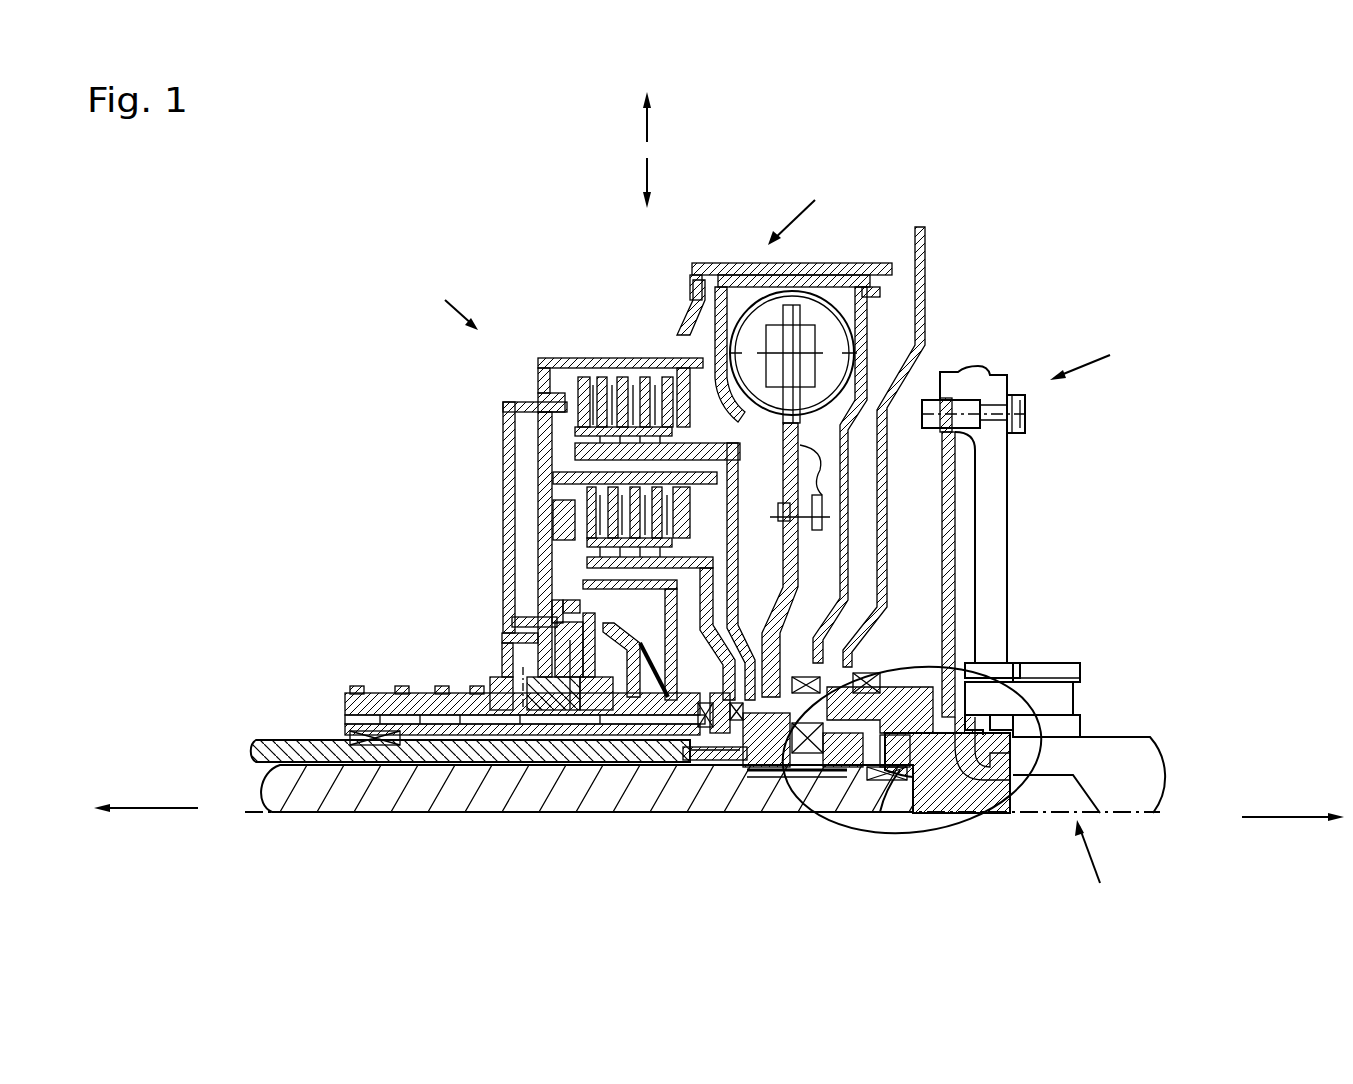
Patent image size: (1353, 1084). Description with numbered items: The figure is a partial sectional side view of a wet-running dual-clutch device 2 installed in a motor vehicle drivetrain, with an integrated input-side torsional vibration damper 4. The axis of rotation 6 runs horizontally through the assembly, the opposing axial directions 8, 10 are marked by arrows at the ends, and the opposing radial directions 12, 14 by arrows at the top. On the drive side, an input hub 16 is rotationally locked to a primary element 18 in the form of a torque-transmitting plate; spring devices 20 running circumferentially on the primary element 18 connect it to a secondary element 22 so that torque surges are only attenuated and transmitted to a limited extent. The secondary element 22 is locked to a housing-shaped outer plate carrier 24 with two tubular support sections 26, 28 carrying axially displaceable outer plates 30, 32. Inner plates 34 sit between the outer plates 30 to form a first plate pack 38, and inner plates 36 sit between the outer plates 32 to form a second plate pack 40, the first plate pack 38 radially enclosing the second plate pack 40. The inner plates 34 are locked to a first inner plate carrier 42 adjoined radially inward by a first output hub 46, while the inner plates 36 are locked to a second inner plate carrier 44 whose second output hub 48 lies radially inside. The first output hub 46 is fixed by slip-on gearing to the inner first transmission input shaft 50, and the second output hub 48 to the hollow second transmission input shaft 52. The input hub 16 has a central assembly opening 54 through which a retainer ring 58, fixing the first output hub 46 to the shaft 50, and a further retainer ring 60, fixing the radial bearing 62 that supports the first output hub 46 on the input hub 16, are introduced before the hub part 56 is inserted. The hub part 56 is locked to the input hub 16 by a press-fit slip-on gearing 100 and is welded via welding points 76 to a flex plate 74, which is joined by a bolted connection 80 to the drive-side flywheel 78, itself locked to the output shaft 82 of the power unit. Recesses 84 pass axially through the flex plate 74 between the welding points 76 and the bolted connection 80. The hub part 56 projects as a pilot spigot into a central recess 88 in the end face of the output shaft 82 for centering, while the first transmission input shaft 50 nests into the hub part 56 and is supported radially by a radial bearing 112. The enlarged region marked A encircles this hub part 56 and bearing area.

The clutch device 2 is at (446, 297).
The torsional vibration damper 4 is at (803, 208).
The axis of rotation 6 is at (1094, 869).
The axial direction 8 is at (1295, 817).
The axial direction 10 is at (152, 808).
The radial direction 12 is at (647, 128).
The radial direction 14 is at (647, 178).
The input hub 16 is at (770, 720).
The primary element 18 is at (855, 415).
The spring devices 20 is at (838, 325).
The secondary element 22 is at (823, 282).
The outer plate carrier 24 is at (547, 440).
The support section 26 is at (605, 363).
The support section 28 is at (597, 478).
The outer plates 30 is at (595, 398).
The outer plates 32 is at (635, 510).
The inner plates 34 is at (593, 393).
The inner plates 36 is at (595, 578).
The first plate pack 38 is at (565, 405).
The second plate pack 40 is at (578, 505).
The first inner plate carrier 42 is at (733, 493).
The second inner plate carrier 44 is at (707, 595).
The first output hub 46 is at (735, 745).
The second output hub 48 is at (718, 720).
The first transmission input shaft 50 is at (467, 788).
The second transmission input shaft 52 is at (407, 752).
The assembly opening 54 is at (960, 810).
The hub part 56 is at (962, 713).
The retainer ring 58 is at (838, 755).
The further retainer ring 60 is at (808, 765).
The radial bearing 62 is at (785, 750).
The flex plate 74 is at (955, 558).
The welding points 76 is at (945, 690).
The flywheel 78 is at (985, 590).
The bolted connection 80 is at (1036, 383).
The output shaft 82 is at (1122, 782).
The recesses 84 is at (968, 650).
The central recess 88 is at (1052, 797).
The slip-on gearing 100 is at (868, 770).
The radial bearing 112 is at (905, 740).
The detail A is at (982, 838).